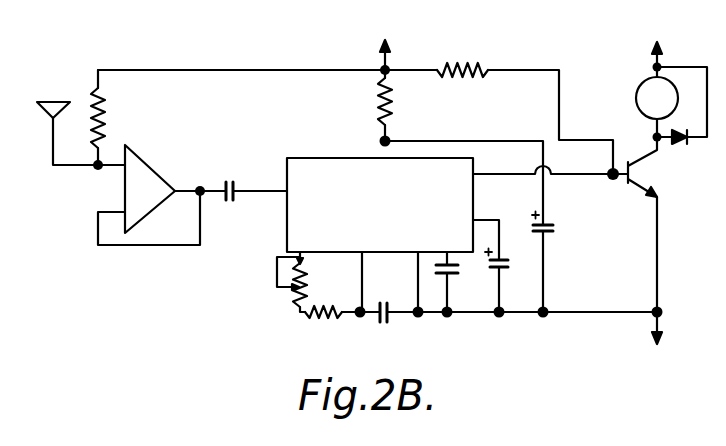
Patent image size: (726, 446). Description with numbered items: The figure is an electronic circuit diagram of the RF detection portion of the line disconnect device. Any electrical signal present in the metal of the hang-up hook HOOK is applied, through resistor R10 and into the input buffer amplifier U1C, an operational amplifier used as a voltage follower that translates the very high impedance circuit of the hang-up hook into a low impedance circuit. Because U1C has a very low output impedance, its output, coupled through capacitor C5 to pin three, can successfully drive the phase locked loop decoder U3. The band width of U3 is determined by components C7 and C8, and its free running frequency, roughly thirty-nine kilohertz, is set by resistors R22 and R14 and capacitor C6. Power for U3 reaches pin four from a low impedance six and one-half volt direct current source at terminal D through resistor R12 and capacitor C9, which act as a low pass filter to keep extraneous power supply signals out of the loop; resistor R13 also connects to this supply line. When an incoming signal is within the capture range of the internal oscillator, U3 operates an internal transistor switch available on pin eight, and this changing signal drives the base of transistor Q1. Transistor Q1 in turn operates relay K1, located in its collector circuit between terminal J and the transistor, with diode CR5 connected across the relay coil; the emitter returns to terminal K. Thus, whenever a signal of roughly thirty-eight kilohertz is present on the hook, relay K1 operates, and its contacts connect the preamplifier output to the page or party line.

The terminal D is at (384, 44).
The terminal J is at (655, 44).
The terminal K is at (656, 340).
The hang-up hook HOOK is at (54, 90).
The resistor R10 is at (118, 118).
The input buffer amplifier U1C is at (125, 190).
The capacitor C5 is at (232, 180).
The phase locked loop decoder U3 is at (380, 205).
The resistor R12 is at (404, 101).
The resistor R13 is at (462, 83).
The resistor R22 is at (318, 285).
The resistor R14 is at (322, 324).
The capacitor C6 is at (386, 299).
The component C7 is at (457, 280).
The component C8 is at (505, 254).
The capacitor C9 is at (557, 224).
The relay K1 is at (623, 102).
The diode CR5 is at (685, 117).
The transistor Q1 is at (646, 224).